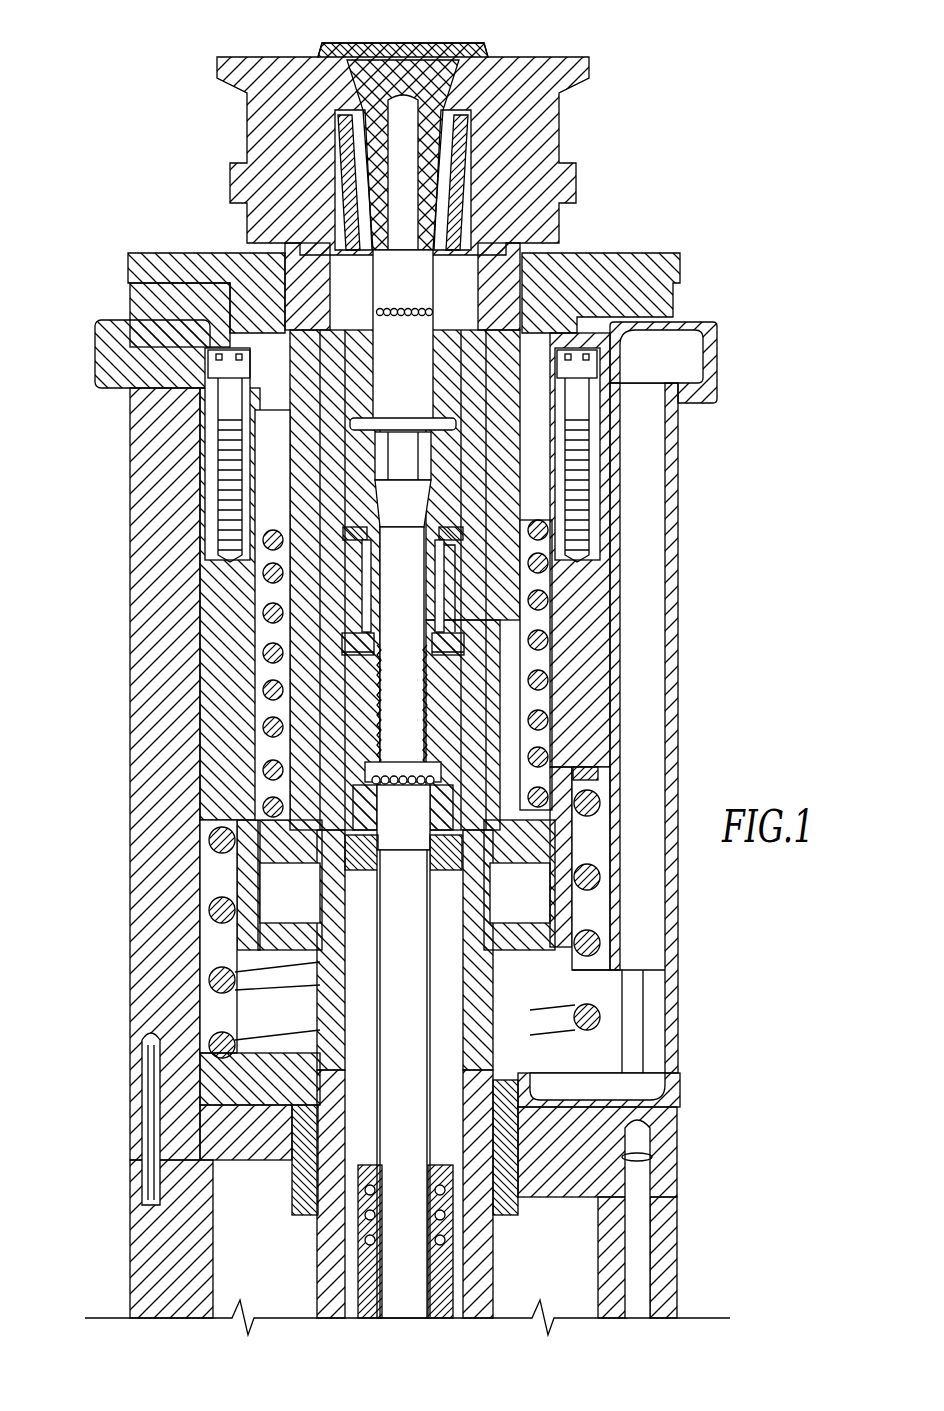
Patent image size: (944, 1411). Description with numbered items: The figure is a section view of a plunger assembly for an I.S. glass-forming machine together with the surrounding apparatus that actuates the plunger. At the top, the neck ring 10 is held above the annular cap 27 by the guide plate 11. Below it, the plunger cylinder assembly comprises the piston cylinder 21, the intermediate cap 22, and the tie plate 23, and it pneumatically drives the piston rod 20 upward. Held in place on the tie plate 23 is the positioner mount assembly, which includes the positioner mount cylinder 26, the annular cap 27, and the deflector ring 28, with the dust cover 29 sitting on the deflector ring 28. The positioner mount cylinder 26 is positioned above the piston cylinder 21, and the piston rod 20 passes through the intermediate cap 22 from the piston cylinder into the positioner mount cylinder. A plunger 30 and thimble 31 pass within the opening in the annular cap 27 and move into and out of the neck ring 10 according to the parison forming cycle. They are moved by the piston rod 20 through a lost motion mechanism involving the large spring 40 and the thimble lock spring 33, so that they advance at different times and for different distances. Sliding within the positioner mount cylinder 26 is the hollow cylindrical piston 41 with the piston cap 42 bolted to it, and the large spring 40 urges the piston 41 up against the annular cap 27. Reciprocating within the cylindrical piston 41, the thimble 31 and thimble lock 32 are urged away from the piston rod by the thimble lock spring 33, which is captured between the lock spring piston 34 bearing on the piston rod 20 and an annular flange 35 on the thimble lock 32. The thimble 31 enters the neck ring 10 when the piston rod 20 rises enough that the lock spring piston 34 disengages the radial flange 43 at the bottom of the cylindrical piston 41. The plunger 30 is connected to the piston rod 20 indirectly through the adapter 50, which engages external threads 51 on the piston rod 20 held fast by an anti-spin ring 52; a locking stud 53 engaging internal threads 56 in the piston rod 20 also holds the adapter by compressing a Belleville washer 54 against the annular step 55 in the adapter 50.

The neck ring 10 is at (556, 112).
The guide plate 11 is at (520, 163).
The piston rod 20 is at (487, 913).
The piston cylinder 21 is at (672, 1220).
The intermediate cap 22 is at (673, 1157).
The tie plate 23 is at (680, 1092).
The positioner mount cylinder 26 is at (145, 870).
The annular cap 27 is at (137, 305).
The deflector ring 28 is at (100, 360).
The dust cover 29 is at (166, 253).
The plunger 30 is at (421, 63).
The thimble 31 is at (530, 282).
The thimble lock 32 is at (473, 473).
The thimble lock spring 33 is at (345, 620).
The lock spring piston 34 is at (293, 837).
The annular flange 35 is at (537, 498).
The large spring 40 is at (220, 830).
The hollow cylindrical piston 41 is at (213, 570).
The piston cap 42 is at (207, 420).
The radial flange 43 is at (267, 937).
The adapter 50 is at (467, 390).
The external threads 51 is at (457, 713).
The anti-spin ring 52 is at (463, 683).
The locking stud 53 is at (437, 617).
The Belleville washer 54 is at (352, 540).
The annular step 55 is at (452, 553).
The internal threads 56 is at (425, 773).